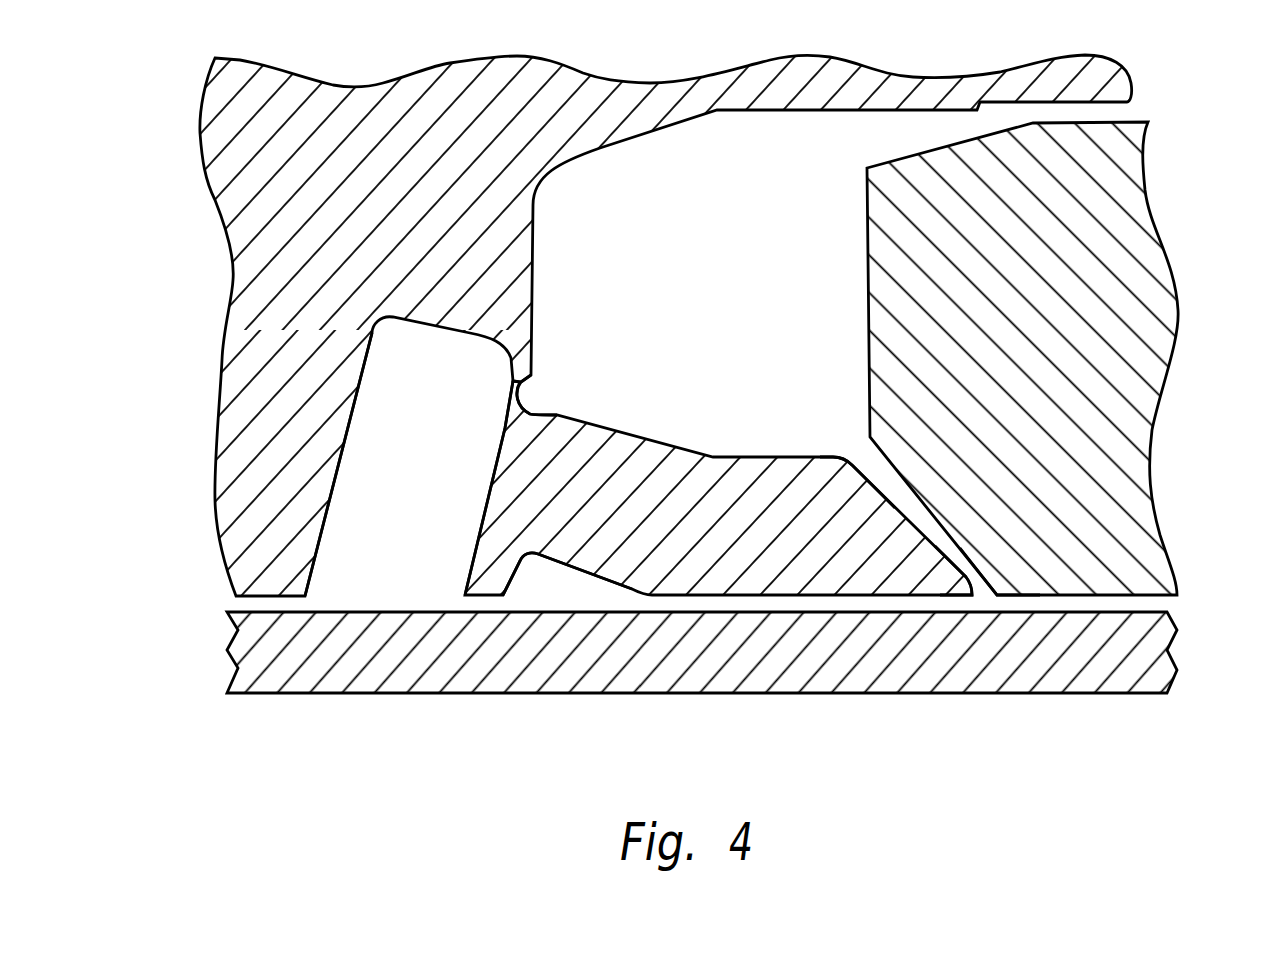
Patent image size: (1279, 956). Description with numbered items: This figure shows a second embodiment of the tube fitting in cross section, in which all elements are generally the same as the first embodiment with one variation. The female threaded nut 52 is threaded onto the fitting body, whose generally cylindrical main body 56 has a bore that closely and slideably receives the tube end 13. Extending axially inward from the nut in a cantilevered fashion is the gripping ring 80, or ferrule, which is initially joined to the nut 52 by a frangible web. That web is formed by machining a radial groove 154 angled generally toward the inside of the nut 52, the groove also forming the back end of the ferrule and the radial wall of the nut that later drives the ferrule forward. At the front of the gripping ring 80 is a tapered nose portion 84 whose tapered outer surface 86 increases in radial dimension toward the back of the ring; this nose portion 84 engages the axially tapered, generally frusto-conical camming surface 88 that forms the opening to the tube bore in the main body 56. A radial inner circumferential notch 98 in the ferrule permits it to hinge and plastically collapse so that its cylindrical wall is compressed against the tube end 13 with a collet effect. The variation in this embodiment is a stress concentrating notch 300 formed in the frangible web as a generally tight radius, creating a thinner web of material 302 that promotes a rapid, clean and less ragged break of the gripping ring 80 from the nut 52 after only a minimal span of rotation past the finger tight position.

The tube end 13 is at (317, 694).
The female threaded nut 52 is at (302, 280).
The main body 56 is at (1090, 272).
The gripping ring 80 is at (777, 563).
The nose portion 84 is at (942, 578).
The tapered outer surface 86 is at (860, 470).
The camming surface 88 is at (980, 571).
The notch 98 is at (567, 579).
The radial groove 154 is at (382, 577).
The stress concentrating notch 300 is at (540, 391).
The thinner web of material 302 is at (512, 398).